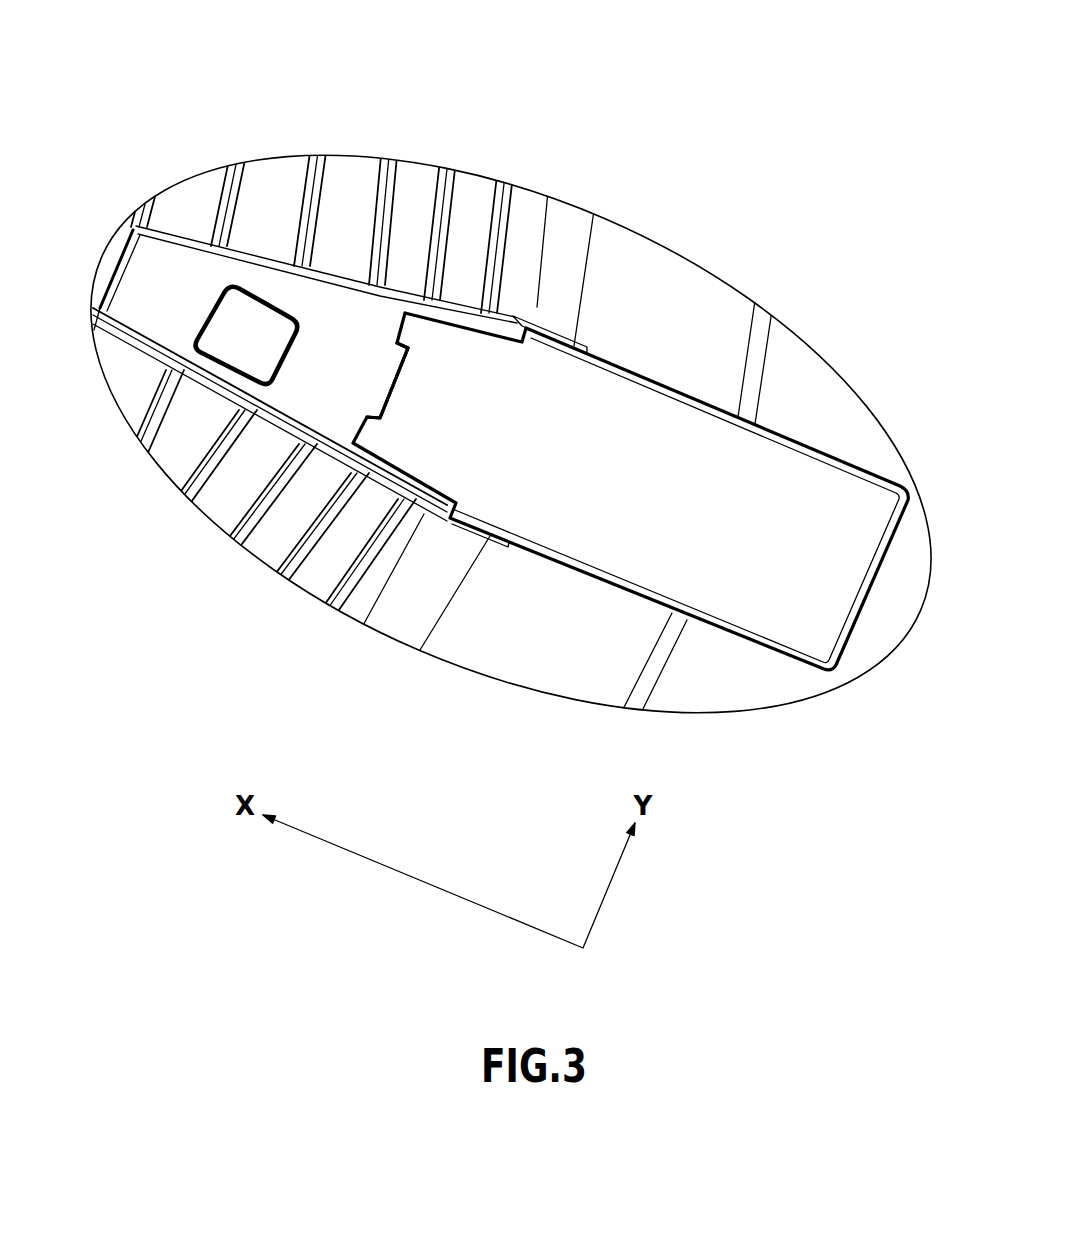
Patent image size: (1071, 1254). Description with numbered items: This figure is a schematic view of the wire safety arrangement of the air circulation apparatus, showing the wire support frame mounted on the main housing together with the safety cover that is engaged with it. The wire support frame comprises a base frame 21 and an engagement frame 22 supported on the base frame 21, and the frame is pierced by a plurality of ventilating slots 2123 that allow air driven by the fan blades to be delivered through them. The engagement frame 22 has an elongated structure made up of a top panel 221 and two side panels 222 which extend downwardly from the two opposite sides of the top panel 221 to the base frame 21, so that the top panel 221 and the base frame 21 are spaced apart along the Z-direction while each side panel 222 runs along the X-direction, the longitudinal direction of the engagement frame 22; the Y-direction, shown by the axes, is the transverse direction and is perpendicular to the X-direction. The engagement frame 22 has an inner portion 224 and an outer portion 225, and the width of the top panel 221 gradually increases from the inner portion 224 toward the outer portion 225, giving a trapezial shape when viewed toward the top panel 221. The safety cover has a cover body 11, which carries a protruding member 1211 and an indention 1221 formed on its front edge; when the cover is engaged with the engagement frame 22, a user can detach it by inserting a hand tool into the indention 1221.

The cover body 11 is at (605, 585).
The base frame 21 is at (468, 642).
The engagement frame 22 is at (270, 495).
The top panel 221 is at (297, 412).
The side panels 222 is at (328, 452).
The inner portion 224 is at (181, 258).
The outer portion 225 is at (540, 310).
The protruding member 1211 is at (250, 320).
The indention 1221 is at (393, 350).
The ventilating slots 2123 is at (353, 172).